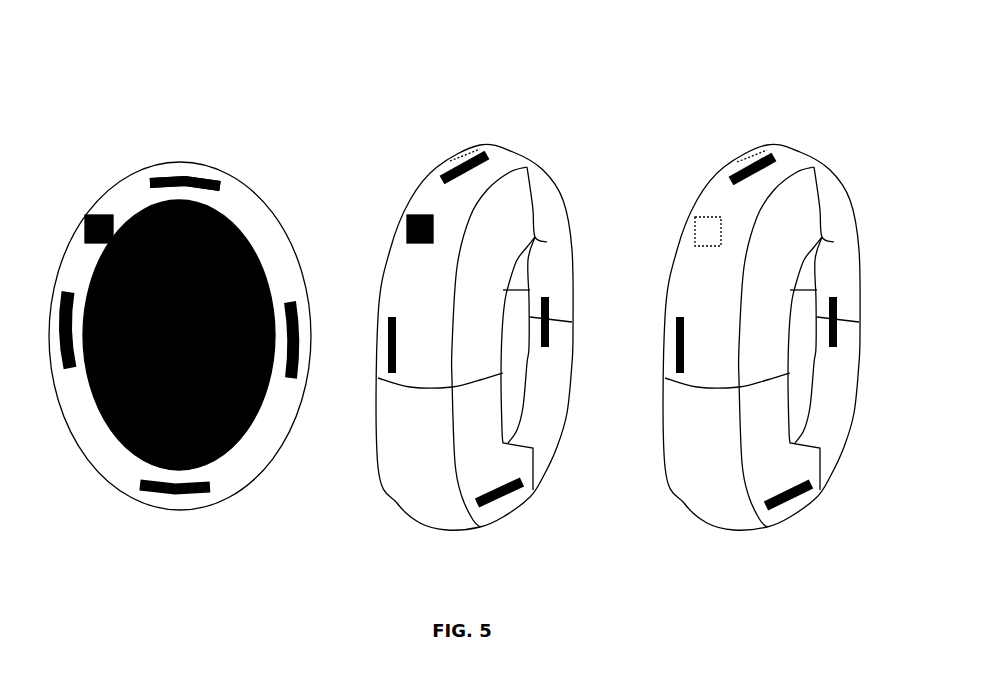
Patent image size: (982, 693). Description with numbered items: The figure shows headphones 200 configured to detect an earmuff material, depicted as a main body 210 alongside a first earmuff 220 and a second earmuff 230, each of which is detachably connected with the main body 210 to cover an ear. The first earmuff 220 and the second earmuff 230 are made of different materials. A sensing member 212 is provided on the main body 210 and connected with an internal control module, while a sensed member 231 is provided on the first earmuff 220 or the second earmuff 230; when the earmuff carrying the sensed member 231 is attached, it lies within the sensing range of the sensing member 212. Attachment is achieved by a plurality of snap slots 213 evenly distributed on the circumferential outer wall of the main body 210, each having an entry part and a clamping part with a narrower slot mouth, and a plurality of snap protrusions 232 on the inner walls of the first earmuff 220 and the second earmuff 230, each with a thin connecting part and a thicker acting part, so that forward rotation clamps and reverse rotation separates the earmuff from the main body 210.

The headphones for detecting an earmuff material 200 is at (460, 291).
The main body b 210 is at (160, 337).
The sensing member b 212 is at (73, 225).
The snap slot 213 is at (168, 178).
The first earmuff 220 is at (832, 442).
The second earmuff 230 is at (465, 342).
The sensed member b 231 is at (422, 213).
The snap protrusion 232 is at (460, 178).